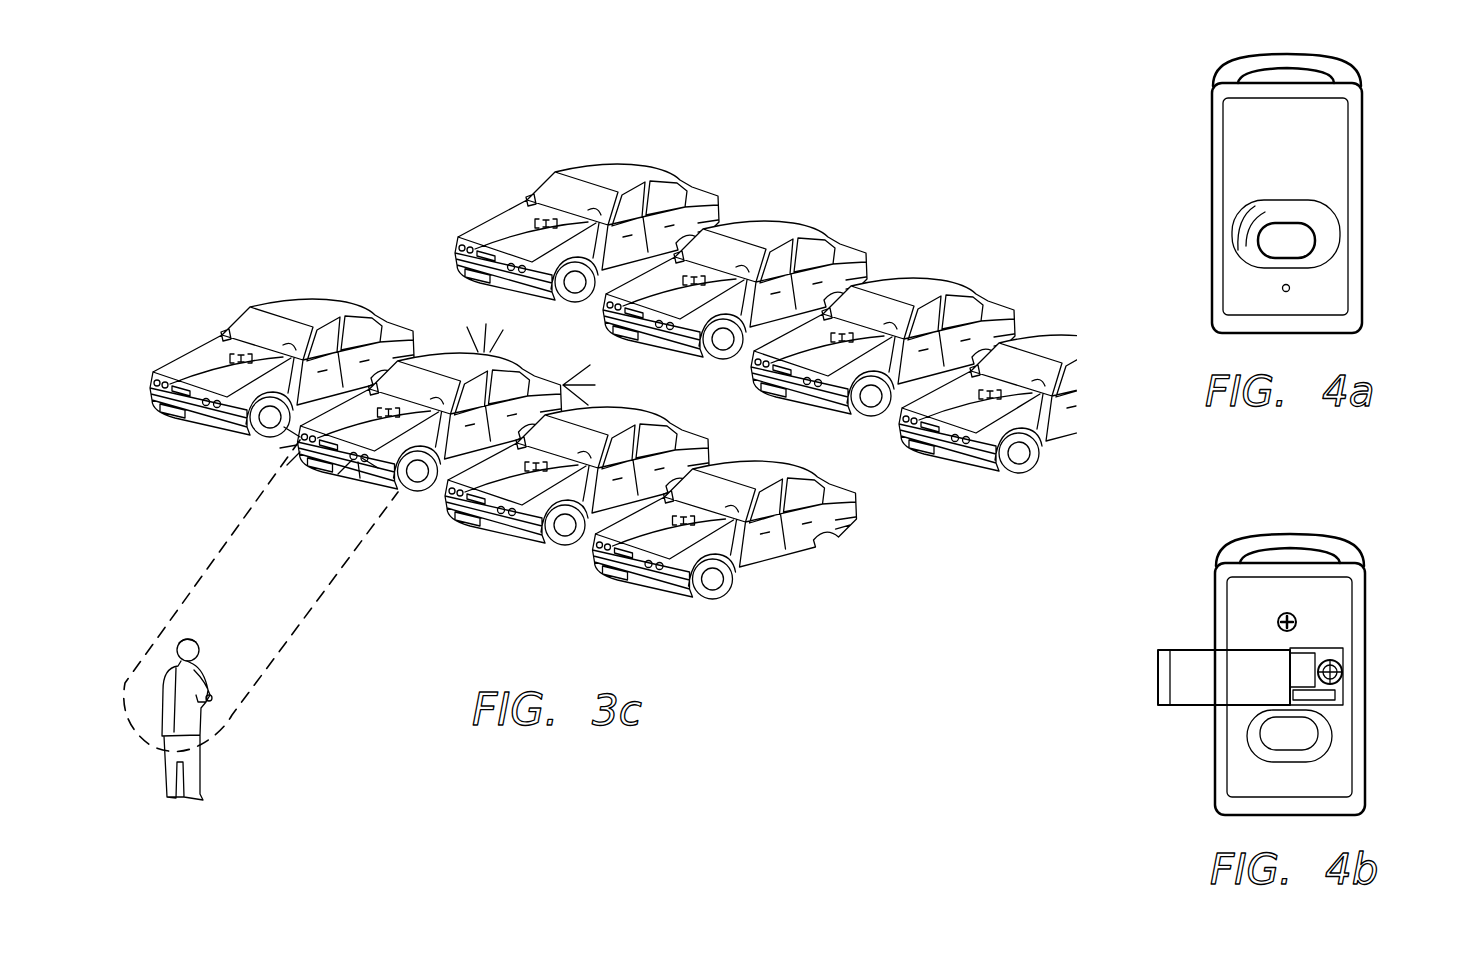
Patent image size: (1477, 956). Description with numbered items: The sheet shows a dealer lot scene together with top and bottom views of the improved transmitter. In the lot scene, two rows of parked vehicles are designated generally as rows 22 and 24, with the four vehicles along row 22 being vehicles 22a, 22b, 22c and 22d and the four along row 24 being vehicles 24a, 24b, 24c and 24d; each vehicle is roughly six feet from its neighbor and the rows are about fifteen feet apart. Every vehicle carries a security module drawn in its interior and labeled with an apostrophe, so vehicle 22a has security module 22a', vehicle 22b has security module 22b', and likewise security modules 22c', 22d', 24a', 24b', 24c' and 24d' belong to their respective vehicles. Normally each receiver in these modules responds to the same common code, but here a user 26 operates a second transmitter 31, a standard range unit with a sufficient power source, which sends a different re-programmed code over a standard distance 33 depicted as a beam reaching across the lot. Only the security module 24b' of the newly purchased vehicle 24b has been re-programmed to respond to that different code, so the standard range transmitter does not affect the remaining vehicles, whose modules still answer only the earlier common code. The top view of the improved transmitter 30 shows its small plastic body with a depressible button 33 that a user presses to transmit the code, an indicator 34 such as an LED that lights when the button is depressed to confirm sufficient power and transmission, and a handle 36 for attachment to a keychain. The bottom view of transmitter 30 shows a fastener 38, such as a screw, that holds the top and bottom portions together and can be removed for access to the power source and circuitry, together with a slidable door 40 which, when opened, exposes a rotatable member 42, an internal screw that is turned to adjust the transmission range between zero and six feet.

In FIG. 3c, the row of vehicles 22 is at (809, 311).
In FIG. 3c, the vehicle 22a is at (587, 253).
In FIG. 3c, the security module 22a' is at (508, 199).
In FIG. 3c, the vehicle 22b is at (719, 310).
In FIG. 3c, the security module 22b' is at (638, 320).
In FIG. 3c, the vehicle 22c is at (868, 366).
In FIG. 3c, the security module 22c' is at (787, 380).
In FIG. 3c, the vehicle 22d is at (1016, 422).
In FIG. 3c, the security module 22d' is at (935, 437).
In FIG. 3c, the row of vehicles 24 is at (503, 444).
In FIG. 3c, the vehicle 24a is at (282, 388).
In FIG. 3c, the security module 24a' is at (202, 333).
In FIG. 3c, the vehicle 24b is at (434, 432).
In FIG. 3c, the security module 24b' is at (337, 464).
In FIG. 3c, the vehicle 24c is at (564, 497).
In FIG. 3c, the security module 24c' is at (483, 512).
In FIG. 3c, the vehicle 24d is at (711, 553).
In FIG. 3c, the security module 24d' is at (630, 568).
In FIG. 3c, the user 26 is at (178, 719).
In FIG. 3c, the second transmitter 31 is at (213, 695).
In FIG. 3c, the standard distance / depressible button 33 is at (313, 617).
In FIG. 4a, the standard distance / depressible button 33 is at (1316, 242).
In FIG. 4a, the transmitter 30 is at (1259, 192).
In FIG. 4b, the transmitter 30 is at (1306, 674).
In FIG. 4a, the indicator 34 is at (1290, 292).
In FIG. 4a, the handle 36 is at (1258, 60).
In FIG. 4b, the fastener 38 is at (1298, 620).
In FIG. 4b, the slidable door 40 is at (1187, 655).
In FIG. 4b, the rotatable member 42 is at (1343, 673).